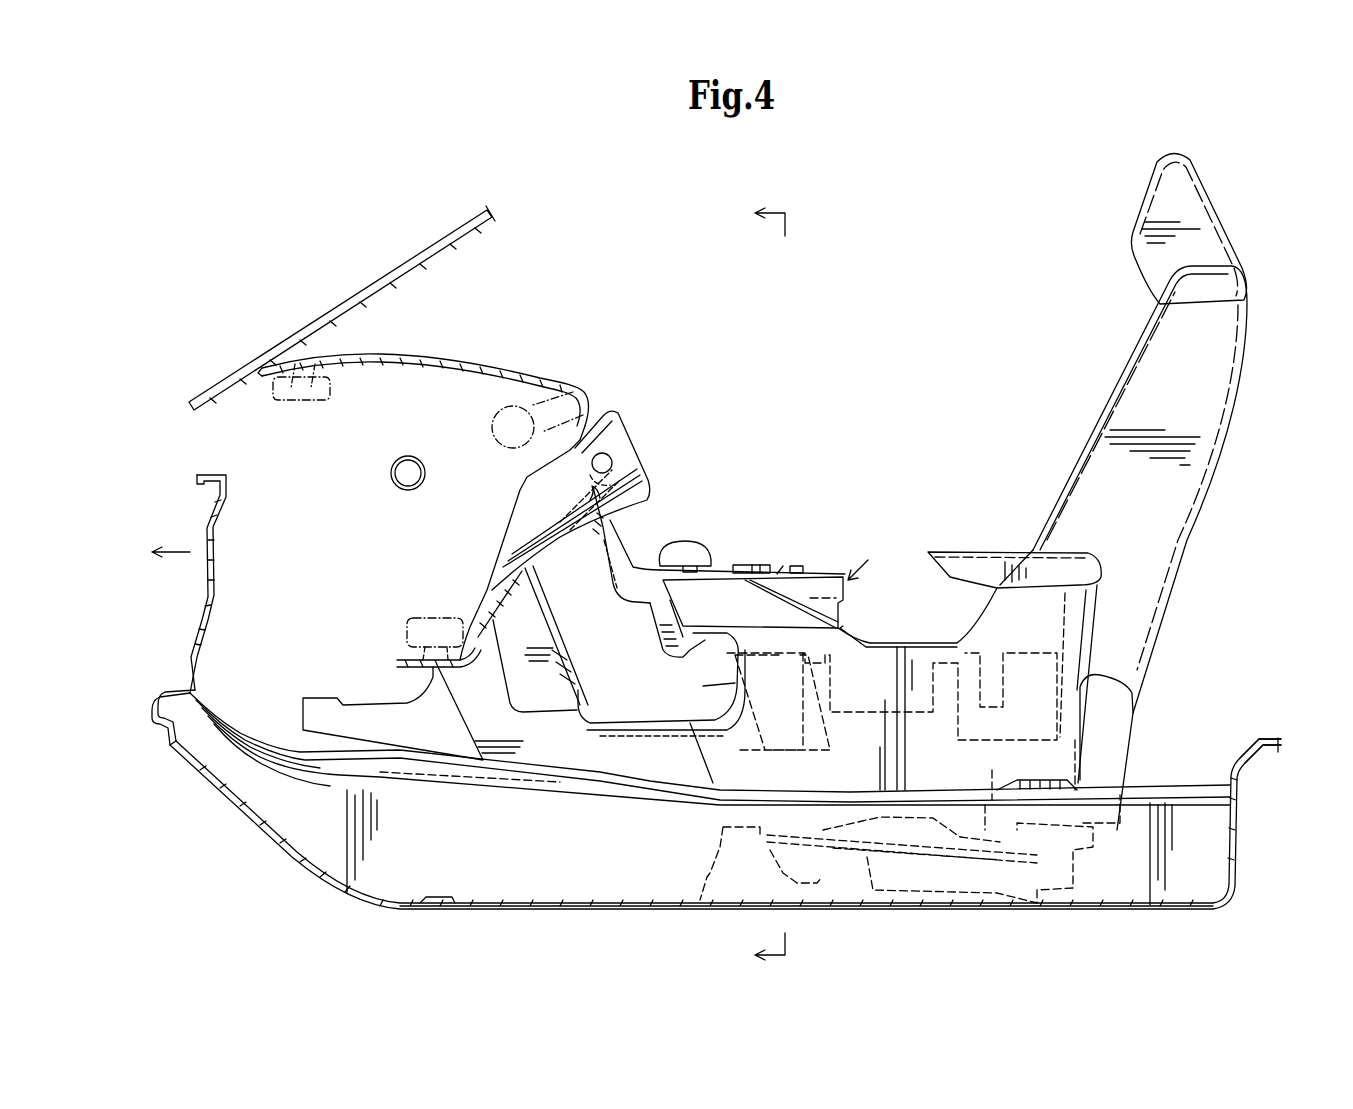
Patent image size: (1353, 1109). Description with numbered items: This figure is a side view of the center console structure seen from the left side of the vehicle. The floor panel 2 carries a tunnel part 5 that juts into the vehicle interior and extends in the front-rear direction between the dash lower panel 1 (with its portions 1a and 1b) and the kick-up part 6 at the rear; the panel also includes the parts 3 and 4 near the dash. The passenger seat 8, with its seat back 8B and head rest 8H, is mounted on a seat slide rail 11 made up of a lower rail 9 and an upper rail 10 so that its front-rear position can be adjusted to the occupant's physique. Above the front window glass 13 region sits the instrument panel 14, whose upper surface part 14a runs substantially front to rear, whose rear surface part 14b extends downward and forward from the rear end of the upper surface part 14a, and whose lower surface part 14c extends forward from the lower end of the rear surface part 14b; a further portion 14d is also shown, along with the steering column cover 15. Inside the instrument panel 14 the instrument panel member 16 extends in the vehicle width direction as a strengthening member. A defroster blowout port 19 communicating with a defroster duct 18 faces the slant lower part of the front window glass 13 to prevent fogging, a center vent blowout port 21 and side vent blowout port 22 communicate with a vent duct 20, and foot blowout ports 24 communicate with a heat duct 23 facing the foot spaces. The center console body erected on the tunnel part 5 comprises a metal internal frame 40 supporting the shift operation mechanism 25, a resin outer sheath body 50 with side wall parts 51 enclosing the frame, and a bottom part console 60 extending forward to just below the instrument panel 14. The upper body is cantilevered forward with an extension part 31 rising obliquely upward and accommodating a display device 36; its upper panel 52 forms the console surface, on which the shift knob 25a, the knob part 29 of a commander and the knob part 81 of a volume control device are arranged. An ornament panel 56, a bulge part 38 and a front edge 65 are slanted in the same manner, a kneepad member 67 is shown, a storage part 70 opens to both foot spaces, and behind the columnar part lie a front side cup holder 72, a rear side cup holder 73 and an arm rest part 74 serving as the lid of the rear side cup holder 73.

The dash lower panel 1 is at (704, 692).
The front pillar 1a is at (210, 622).
The front body lower 1b is at (242, 816).
The floor panel 2 is at (843, 913).
The dash panel 3 is at (156, 722).
The dash lower 4 is at (170, 700).
The tunnel part 5 is at (487, 895).
The kick-up part 6 is at (1237, 833).
The passenger seat 8 is at (1138, 491).
The seat back 8B is at (1181, 406).
The head rest 8H is at (1131, 251).
The lower rail 9 is at (884, 866).
The upper rail 10 is at (1060, 873).
The seat slide rail 11 is at (958, 875).
The front window glass 13 is at (420, 262).
The instrument panel 14 is at (483, 490).
The upper surface part 14a is at (380, 357).
The rear surface part 14b is at (486, 608).
The lower surface part 14c is at (400, 670).
The instrument panel portion 14d is at (634, 447).
The steering column cover 15 is at (618, 436).
The instrument panel member 16 is at (409, 456).
The defroster duct 18 is at (273, 396).
The defroster blowout port 19 is at (311, 357).
The vent duct 20 is at (492, 427).
The center vent blowout port 21 is at (576, 375).
The side vent blowout port 22 is at (584, 380).
The heat duct 23 is at (413, 615).
The foot blowout port 24 is at (435, 687).
The shift operation mechanism 25 is at (693, 511).
The shift knob 25a is at (693, 547).
The knob part 29 is at (748, 563).
The extension part 31 is at (600, 568).
The display device 36 is at (580, 520).
The bulge part 38 is at (655, 620).
The internal frame 40 is at (822, 691).
The outer sheath body 50 is at (878, 636).
The side wall part 51 is at (791, 706).
The upper panel 52 is at (780, 565).
The ornament panel 56 is at (742, 608).
The bottom part console 60 is at (597, 795).
The brace 65 is at (579, 633).
The kneepad member 67 is at (520, 678).
The storage part 70 is at (641, 704).
The front side cup holder 72 is at (928, 726).
The rear side cup holder 73 is at (998, 760).
The arm rest part 74 is at (985, 553).
The knob part 81 is at (798, 566).